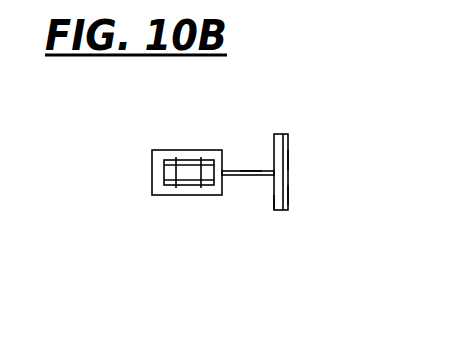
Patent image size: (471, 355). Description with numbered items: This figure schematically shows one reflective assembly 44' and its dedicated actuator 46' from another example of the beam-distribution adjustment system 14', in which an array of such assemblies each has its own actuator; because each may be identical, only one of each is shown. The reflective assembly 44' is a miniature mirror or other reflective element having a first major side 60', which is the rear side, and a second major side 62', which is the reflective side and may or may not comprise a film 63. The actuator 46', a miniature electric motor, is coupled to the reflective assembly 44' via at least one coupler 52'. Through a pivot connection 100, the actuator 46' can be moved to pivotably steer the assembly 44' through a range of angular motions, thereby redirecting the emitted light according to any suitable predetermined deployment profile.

The beam-distribution adjustment system 14' is at (134, 142).
The actuator 46' is at (162, 200).
The pivot connection 100 is at (228, 177).
The coupler 52' is at (237, 134).
The first major side 60' is at (281, 158).
The film 63 is at (288, 158).
The second major side 62' is at (308, 212).
The reflective assembly 44' is at (253, 227).